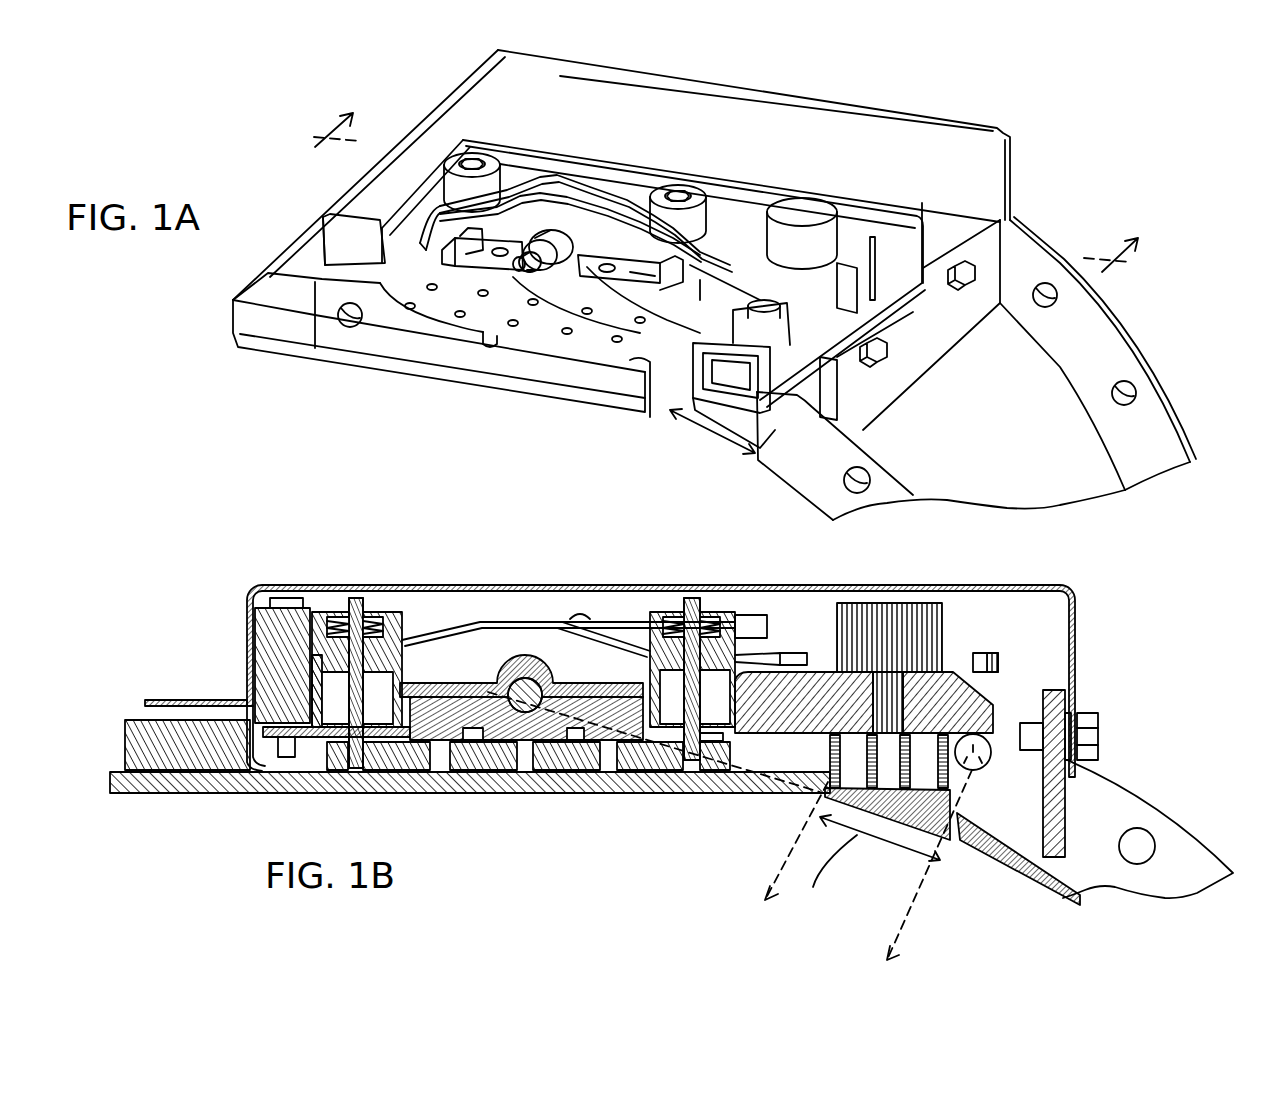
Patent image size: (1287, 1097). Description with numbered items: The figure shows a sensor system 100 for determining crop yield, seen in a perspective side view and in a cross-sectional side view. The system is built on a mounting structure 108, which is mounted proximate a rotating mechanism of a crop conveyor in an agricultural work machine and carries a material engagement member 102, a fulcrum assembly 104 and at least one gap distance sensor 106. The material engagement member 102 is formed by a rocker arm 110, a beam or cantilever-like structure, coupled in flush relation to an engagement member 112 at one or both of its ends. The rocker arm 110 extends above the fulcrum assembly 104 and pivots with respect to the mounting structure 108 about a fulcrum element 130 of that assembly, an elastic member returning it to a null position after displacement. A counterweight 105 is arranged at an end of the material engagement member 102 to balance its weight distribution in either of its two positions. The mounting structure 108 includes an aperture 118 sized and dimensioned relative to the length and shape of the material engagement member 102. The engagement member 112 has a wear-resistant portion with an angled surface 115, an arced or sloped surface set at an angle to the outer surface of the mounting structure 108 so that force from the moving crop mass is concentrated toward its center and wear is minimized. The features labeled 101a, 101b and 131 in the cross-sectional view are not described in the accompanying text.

In FIG. 1A, the sensor system 100 is at (1072, 94).
In FIG. 1B, the sensor system 100 is at (1112, 578).
In FIG. 1B, the first direction of emitted light 101a is at (807, 843).
In FIG. 1B, the second direction of emitted light 101b is at (927, 893).
In FIG. 1A, the material engagement member 102 is at (590, 240).
In FIG. 1B, the material engagement member 102 is at (550, 652).
In FIG. 1A, the fulcrum assembly 104 is at (630, 290).
In FIG. 1B, the fulcrum assembly 104 is at (560, 723).
In FIG. 1B, the counterweight 105 is at (267, 623).
In FIG. 1A, the gap distance sensor 106 is at (663, 295).
In FIG. 1A, the mounting structure 108 is at (270, 357).
In FIG. 1B, the mounting structure 108 is at (1173, 810).
In FIG. 1B, the rocker arm 110 is at (797, 703).
In FIG. 1B, the engagement member 112 is at (964, 772).
In FIG. 1B, the angled surface 115 is at (905, 828).
In FIG. 1A, the aperture 118 is at (713, 455).
In FIG. 1A, the fulcrum element 130 is at (550, 282).
In FIG. 1B, the fulcrum element 130 is at (523, 678).
In FIG. 1A, the pivot block 131 is at (500, 290).
In FIG. 1B, the pivot block 131 is at (498, 693).